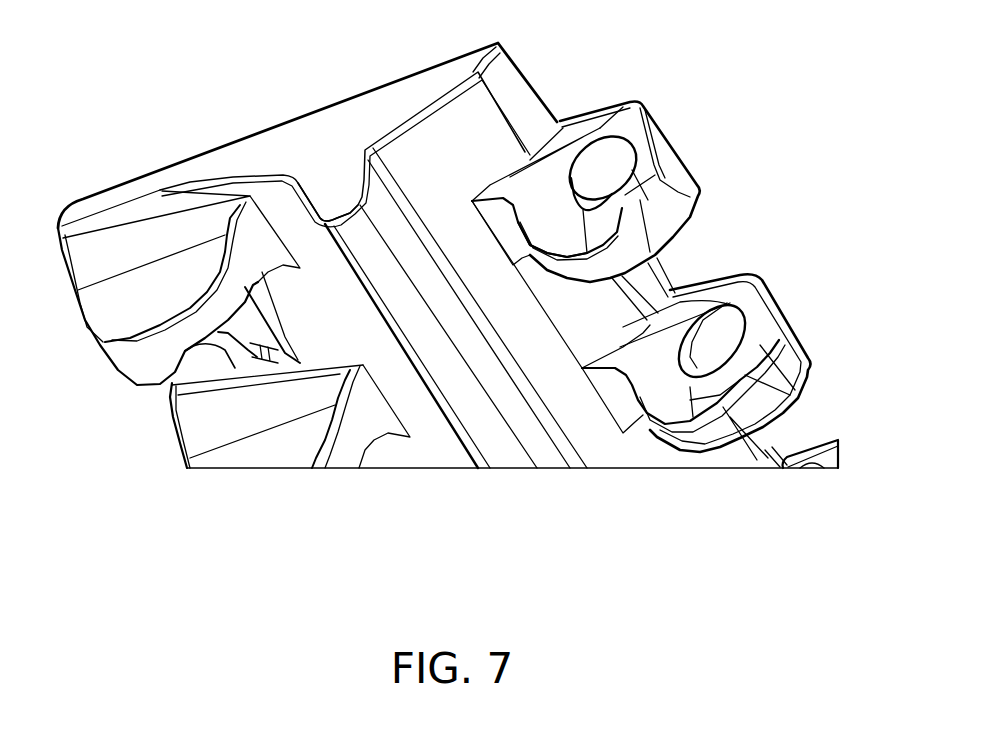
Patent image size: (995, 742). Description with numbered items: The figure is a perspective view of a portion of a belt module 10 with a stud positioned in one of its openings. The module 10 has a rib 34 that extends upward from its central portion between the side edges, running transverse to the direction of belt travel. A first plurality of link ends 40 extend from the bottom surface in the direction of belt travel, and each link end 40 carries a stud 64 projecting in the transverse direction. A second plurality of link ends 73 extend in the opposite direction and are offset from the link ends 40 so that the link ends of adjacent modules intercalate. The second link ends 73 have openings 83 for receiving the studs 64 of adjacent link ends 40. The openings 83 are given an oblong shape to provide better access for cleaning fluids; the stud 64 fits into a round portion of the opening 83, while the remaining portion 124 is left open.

The belt module 10 is at (428, 448).
The rib 34 is at (338, 183).
The first plurality of link ends 40 is at (130, 360).
The stud 64 is at (602, 157).
The second plurality of link ends 73 is at (678, 175).
The opening 83 is at (707, 353).
The remaining portion 124 is at (574, 205).